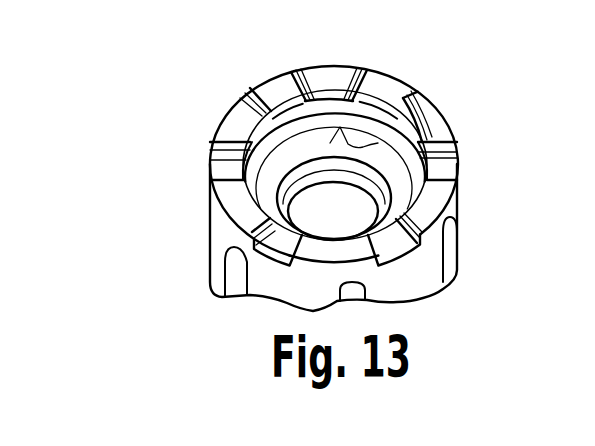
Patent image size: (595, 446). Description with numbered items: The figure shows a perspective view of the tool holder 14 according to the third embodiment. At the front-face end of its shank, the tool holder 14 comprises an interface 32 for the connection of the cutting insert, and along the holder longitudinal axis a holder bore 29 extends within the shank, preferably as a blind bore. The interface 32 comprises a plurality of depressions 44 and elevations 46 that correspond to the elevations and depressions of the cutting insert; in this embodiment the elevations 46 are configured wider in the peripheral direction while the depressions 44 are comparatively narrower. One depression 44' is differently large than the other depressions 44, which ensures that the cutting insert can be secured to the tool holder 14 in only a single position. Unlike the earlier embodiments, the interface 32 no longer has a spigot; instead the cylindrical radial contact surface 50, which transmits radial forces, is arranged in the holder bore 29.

The tool holder 14 is at (172, 234).
The holder bore 29 is at (350, 204).
The interface 32 is at (481, 96).
The depression 44 is at (334, 180).
The depression 44' is at (399, 67).
The elevation 46 is at (325, 70).
The radial contact surface 50 is at (394, 111).